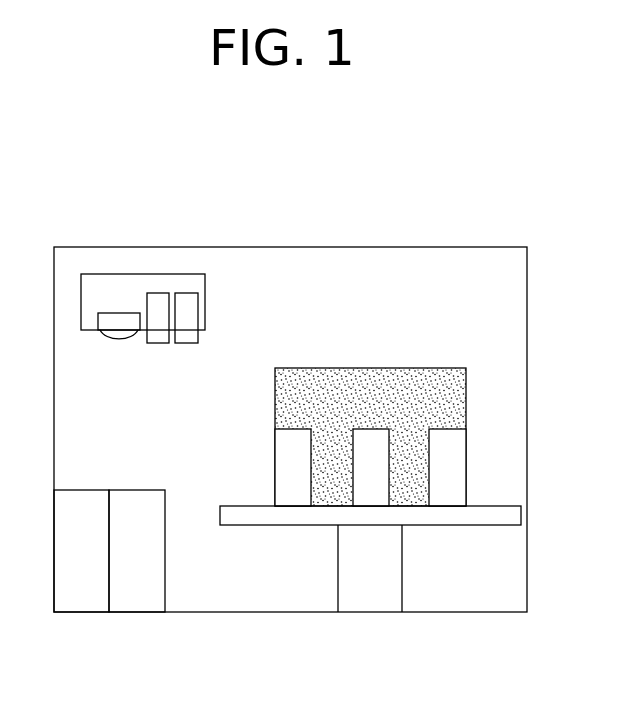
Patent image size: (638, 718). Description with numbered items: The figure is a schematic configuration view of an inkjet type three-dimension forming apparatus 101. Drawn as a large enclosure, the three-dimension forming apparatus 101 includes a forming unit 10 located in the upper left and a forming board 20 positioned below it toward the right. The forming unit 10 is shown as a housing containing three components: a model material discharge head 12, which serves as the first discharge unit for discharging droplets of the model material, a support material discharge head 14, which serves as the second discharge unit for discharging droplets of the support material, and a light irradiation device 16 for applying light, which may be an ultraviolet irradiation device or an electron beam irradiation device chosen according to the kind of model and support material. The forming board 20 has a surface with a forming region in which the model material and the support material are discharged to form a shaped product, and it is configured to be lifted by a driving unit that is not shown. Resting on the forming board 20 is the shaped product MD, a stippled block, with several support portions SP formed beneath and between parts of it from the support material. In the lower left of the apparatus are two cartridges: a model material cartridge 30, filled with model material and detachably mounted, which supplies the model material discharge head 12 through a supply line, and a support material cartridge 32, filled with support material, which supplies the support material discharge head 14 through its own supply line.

The three-dimension forming apparatus 101 is at (416, 196).
The forming unit 10 is at (140, 274).
The model material discharge head 12 is at (157, 293).
The support material discharge head 14 is at (188, 293).
The light irradiation device 16 is at (119, 344).
The shaped product MD is at (445, 383).
The support portion SP is at (360, 457).
The forming board 20 is at (510, 518).
The model material cartridge 30 is at (82, 593).
The support material cartridge 32 is at (133, 593).